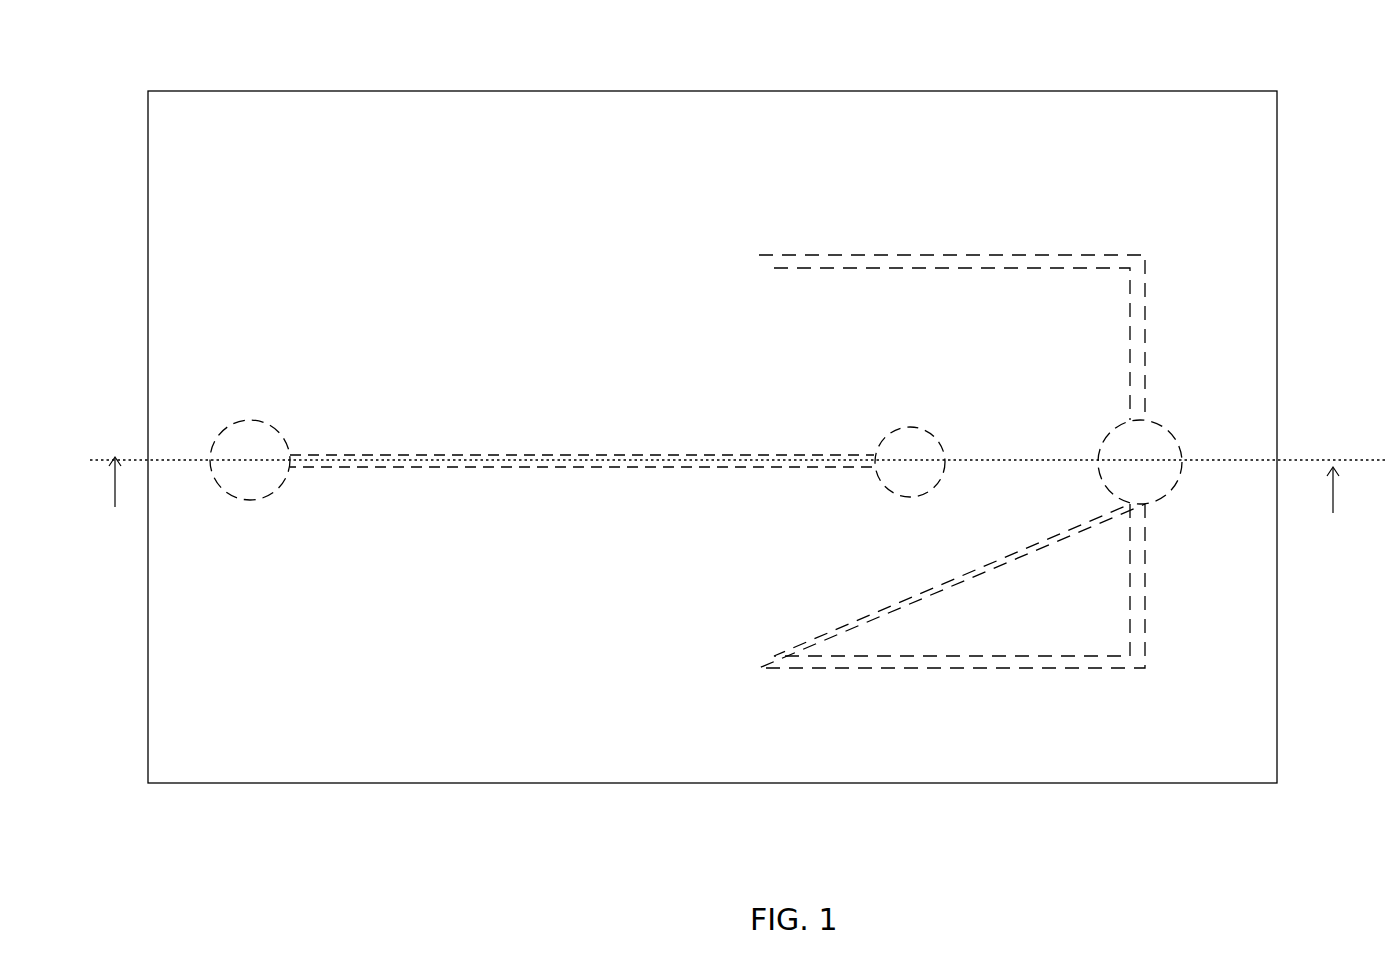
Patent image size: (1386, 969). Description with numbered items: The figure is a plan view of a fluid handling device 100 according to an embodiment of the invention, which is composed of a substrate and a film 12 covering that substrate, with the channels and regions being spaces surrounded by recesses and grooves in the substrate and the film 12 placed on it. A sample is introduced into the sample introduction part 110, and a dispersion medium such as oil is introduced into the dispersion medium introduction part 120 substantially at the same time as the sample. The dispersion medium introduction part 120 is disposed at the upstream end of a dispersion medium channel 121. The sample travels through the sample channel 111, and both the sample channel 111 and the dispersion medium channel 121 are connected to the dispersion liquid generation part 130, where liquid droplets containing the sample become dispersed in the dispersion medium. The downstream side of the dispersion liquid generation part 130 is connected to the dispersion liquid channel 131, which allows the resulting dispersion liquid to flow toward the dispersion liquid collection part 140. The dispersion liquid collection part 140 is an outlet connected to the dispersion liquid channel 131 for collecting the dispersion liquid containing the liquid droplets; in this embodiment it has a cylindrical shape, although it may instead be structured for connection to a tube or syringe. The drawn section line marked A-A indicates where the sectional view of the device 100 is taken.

The fluid handling device 100 is at (1293, 41).
The film 12 is at (1080, 104).
The dispersion liquid collection part 140 is at (240, 447).
The dispersion liquid channel 131 is at (515, 463).
The dispersion liquid generation part 130 is at (582, 649).
The dispersion medium channel 121 is at (1108, 660).
The sample channel 111 is at (800, 468).
The sample introduction part 110 is at (915, 487).
The dispersion medium introduction part 120 is at (1175, 447).